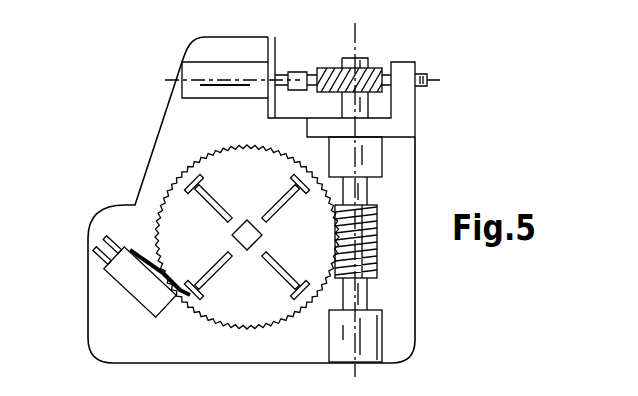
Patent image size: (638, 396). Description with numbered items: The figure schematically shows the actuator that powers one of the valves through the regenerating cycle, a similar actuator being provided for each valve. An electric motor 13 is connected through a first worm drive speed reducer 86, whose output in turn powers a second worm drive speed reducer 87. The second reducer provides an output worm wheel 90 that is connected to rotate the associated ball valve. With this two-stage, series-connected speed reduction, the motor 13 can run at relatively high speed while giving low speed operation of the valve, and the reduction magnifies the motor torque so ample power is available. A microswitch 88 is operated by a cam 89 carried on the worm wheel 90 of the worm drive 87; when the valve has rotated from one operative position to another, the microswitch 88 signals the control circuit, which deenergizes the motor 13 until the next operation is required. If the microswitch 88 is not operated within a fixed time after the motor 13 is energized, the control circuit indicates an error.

The electric motor 13 is at (198, 72).
The first worm drive speed reducer 86 is at (372, 68).
The second worm drive speed reducer 87 is at (333, 283).
The microswitch 88 is at (138, 290).
The cam 89 is at (203, 293).
The output worm wheel 90 is at (202, 345).